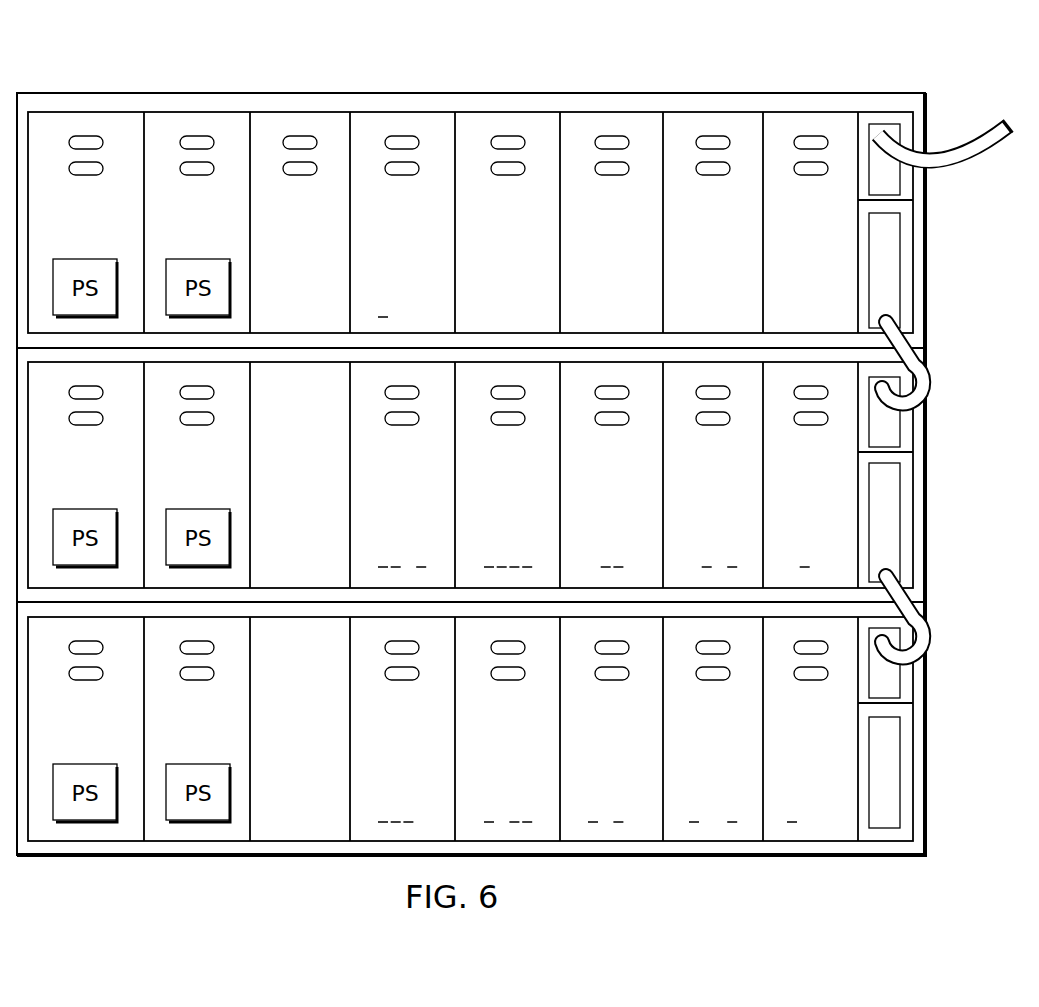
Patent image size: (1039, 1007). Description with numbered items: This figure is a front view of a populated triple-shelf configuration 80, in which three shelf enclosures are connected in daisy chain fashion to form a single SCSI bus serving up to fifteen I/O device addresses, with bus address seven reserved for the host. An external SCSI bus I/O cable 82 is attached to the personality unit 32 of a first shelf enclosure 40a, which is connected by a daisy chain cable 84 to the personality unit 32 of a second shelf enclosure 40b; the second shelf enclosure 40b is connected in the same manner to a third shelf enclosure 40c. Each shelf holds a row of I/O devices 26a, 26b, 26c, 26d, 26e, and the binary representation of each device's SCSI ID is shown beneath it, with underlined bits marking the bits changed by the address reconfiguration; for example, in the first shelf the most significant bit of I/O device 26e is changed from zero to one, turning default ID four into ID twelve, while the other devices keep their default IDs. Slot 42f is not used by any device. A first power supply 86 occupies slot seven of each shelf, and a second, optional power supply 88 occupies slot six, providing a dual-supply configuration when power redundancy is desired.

The triple-shelf configuration 80 is at (778, 41).
The first power supply 86 is at (55, 120).
The second power supply 88 is at (177, 120).
The slot 42f is at (270, 122).
The I/O device 26e is at (372, 122).
The I/O device 26d is at (480, 122).
The I/O device 26c is at (582, 122).
The I/O device 26b is at (684, 122).
The I/O device 26a is at (793, 122).
The external SCSI bus I/O cable 82 is at (992, 153).
The first shelf enclosure 40a is at (932, 245).
The second shelf enclosure 40b is at (932, 498).
The third shelf enclosure 40c is at (932, 702).
The personality unit 32 is at (907, 312).
The daisy chain cable 84 is at (935, 385).